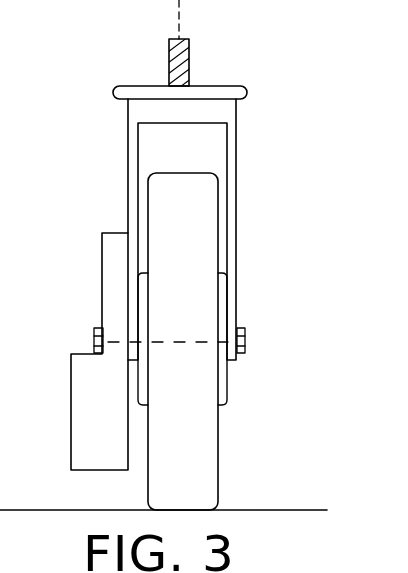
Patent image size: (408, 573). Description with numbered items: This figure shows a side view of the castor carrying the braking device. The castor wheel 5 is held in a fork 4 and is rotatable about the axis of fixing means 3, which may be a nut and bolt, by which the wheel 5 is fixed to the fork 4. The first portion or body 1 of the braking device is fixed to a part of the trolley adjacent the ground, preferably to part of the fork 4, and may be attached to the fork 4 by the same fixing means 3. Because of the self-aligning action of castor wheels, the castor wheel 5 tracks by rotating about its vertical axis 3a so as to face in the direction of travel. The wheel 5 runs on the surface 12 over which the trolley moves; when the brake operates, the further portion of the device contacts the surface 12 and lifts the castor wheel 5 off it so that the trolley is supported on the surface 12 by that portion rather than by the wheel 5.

The first portion or body 1 is at (84, 411).
The fixing means 3 is at (246, 338).
The vertical axis 3a is at (180, 20).
The fork 4 is at (237, 152).
The castor wheel 5 is at (212, 456).
The surface 12 is at (292, 510).